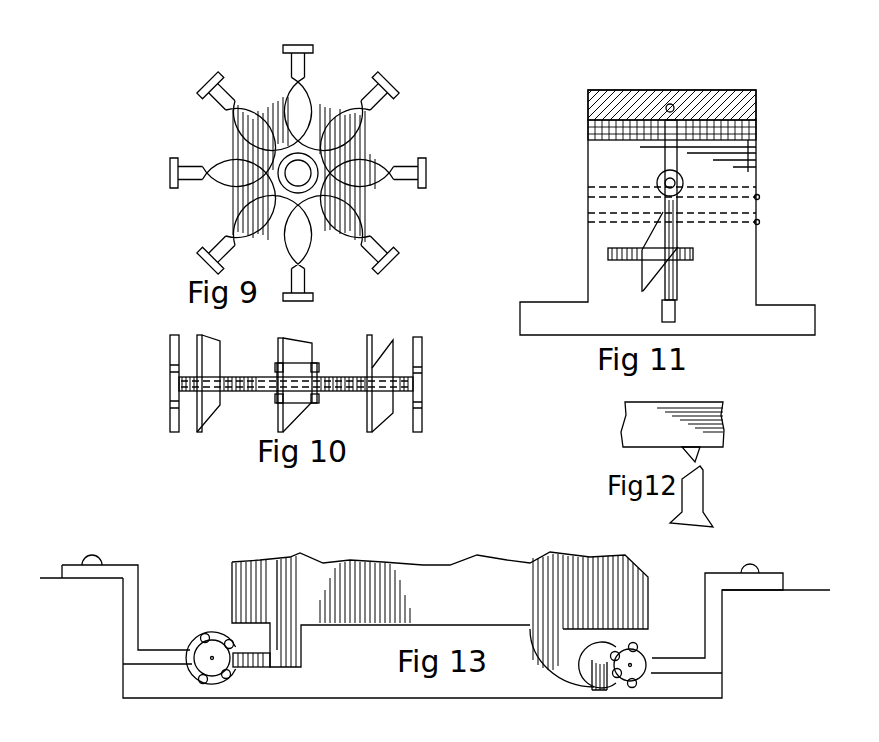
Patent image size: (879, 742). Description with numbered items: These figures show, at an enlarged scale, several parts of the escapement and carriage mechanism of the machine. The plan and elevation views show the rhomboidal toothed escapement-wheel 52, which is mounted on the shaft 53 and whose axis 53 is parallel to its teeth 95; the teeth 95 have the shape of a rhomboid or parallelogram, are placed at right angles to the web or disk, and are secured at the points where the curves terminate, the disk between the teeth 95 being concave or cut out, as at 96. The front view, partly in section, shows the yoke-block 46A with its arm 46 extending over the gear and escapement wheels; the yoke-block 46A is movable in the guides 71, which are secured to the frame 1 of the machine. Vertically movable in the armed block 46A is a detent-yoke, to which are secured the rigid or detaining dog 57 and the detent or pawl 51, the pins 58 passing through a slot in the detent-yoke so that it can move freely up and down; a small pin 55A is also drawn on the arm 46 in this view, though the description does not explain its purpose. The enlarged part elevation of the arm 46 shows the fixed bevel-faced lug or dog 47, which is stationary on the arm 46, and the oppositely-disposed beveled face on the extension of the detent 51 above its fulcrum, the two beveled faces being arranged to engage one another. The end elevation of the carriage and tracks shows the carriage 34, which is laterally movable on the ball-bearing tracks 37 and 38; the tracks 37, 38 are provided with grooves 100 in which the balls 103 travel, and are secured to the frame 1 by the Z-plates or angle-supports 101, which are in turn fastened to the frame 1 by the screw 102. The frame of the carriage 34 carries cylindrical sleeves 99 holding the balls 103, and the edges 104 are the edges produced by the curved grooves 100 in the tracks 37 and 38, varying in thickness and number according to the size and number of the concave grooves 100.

In FIG. 13, the frame 1 is at (435, 607).
In FIG. 13, the carriage 34 is at (440, 619).
In FIG. 13, the ball-bearing track 37 is at (203, 655).
In FIG. 13, the ball-bearing track 38 is at (645, 667).
In FIG. 11, the arm 46 is at (600, 106).
In FIG. 12, the arm 46 is at (672, 424).
In FIG. 11, the yoke-block 46A is at (757, 238).
In FIG. 11, the beveled lug or dog 47 is at (733, 95).
In FIG. 12, the beveled lug or dog 47 is at (699, 453).
In FIG. 11, the detent or pawl 51 is at (664, 168).
In FIG. 12, the detent or pawl 51 is at (690, 493).
In FIG. 9, the escapement-wheel 52 is at (298, 173).
In FIG. 10, the escapement-wheel 52 is at (322, 379).
In FIG. 11, the escapement-wheel 52 is at (617, 248).
In FIG. 9, the shaft 53 is at (297, 168).
In FIG. 11, the pin 55A is at (673, 103).
In FIG. 11, the rigid or detaining dog 57 is at (675, 312).
In FIG. 11, the pins 58 is at (588, 192).
In FIG. 11, the guides 71 is at (532, 302).
In FIG. 9, the teeth 95 is at (314, 47).
In FIG. 10, the teeth 95 is at (170, 372).
In FIG. 11, the teeth 95 is at (641, 280).
In FIG. 9, the concave cut-out 96 is at (398, 212).
In FIG. 10, the concave cut-out 96 is at (250, 384).
In FIG. 13, the cylindrical sleeves 99 is at (218, 685).
In FIG. 13, the grooves 100 is at (209, 637).
In FIG. 13, the Z-plates or angle-supports 101 is at (118, 572).
In FIG. 13, the screw 102 is at (91, 556).
In FIG. 13, the balls 103 is at (200, 681).
In FIG. 13, the edges 104 is at (234, 665).